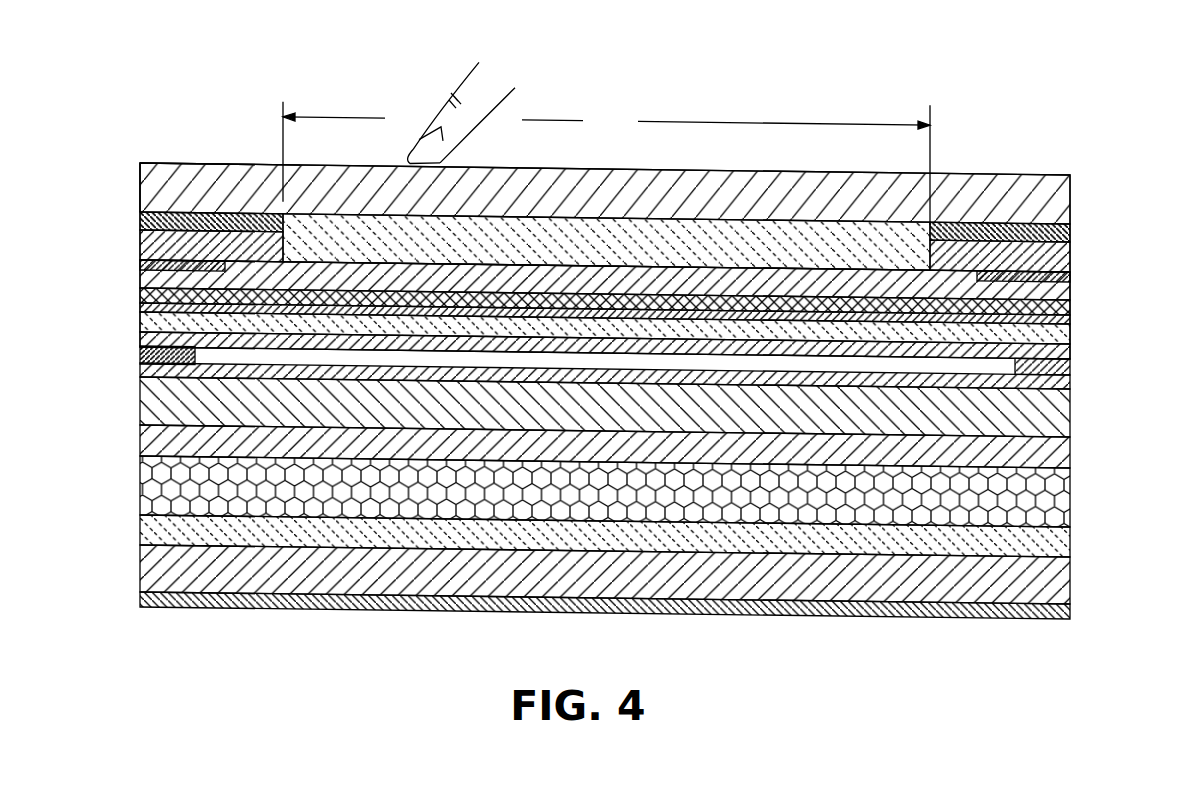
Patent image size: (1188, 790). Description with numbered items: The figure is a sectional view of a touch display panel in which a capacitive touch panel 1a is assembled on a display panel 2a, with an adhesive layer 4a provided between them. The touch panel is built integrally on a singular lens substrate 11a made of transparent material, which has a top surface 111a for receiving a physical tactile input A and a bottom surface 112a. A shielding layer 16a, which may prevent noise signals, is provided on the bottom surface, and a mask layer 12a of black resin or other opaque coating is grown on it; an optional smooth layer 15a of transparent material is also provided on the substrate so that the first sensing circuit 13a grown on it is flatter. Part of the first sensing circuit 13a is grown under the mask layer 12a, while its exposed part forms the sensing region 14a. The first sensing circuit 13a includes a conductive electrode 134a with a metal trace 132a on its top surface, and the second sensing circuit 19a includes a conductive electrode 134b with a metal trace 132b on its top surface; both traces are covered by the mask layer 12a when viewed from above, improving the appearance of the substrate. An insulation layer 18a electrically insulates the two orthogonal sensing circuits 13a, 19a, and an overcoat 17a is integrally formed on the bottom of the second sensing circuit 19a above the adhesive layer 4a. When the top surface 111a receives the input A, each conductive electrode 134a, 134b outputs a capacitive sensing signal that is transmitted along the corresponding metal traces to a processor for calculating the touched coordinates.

The capacitive touch panel 1a is at (119, 164).
The display panel 2a is at (119, 367).
The adhesive layer 4a is at (140, 356).
The singular lens substrate 11a is at (1078, 194).
The top surface 111a is at (172, 163).
The bottom surface 112a is at (207, 224).
The mask layer 12a is at (962, 235).
The first sensing circuit 13a is at (1085, 260).
The metal trace 132a is at (1072, 258).
The metal trace 132b is at (1072, 300).
The conductive electrode 134a is at (722, 262).
The conductive electrode 134b is at (1072, 342).
The sensing region 14a is at (606, 161).
The smooth layer 15a is at (818, 232).
The shielding layer 16a is at (1003, 251).
The overcoat 17a is at (1075, 359).
The insulation layer 18a is at (787, 289).
The second sensing circuit 19a is at (1085, 306).
The physical tactile input A is at (405, 160).